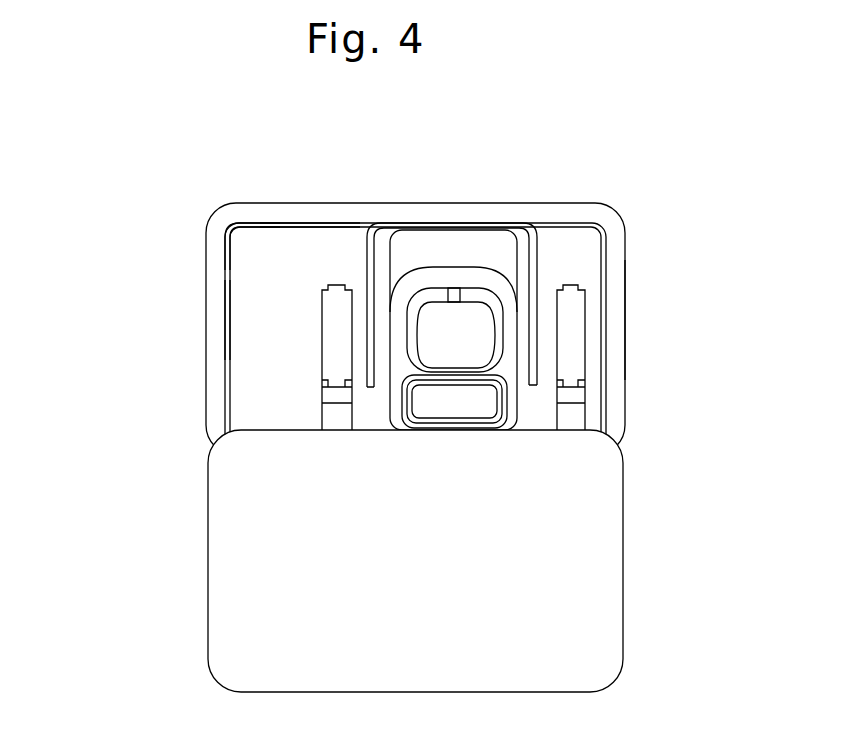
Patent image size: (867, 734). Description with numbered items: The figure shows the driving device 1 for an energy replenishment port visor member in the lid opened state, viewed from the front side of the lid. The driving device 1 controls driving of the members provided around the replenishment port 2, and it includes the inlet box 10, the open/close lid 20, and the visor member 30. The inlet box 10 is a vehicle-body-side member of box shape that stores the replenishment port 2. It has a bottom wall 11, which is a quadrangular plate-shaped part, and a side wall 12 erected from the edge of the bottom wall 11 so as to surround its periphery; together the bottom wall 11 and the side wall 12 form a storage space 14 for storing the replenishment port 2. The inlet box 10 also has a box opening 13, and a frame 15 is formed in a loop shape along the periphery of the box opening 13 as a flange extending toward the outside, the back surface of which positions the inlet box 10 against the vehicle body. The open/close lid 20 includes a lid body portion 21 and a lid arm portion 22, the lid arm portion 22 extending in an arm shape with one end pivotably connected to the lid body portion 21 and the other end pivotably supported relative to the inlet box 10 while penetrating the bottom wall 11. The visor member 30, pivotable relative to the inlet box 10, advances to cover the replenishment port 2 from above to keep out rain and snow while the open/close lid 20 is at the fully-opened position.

The driving device 1 is at (152, 552).
The replenishment port 2 is at (458, 328).
The inlet box 10 is at (621, 217).
The bottom wall 11 is at (248, 383).
The side wall 12 is at (345, 225).
The box opening 13 is at (225, 347).
The storage space 14 is at (256, 250).
The frame 15 is at (617, 312).
The open/close lid 20 is at (750, 461).
The lid body portion 21 is at (597, 531).
The lid arm portion 22 is at (570, 413).
The visor member 30 is at (533, 250).